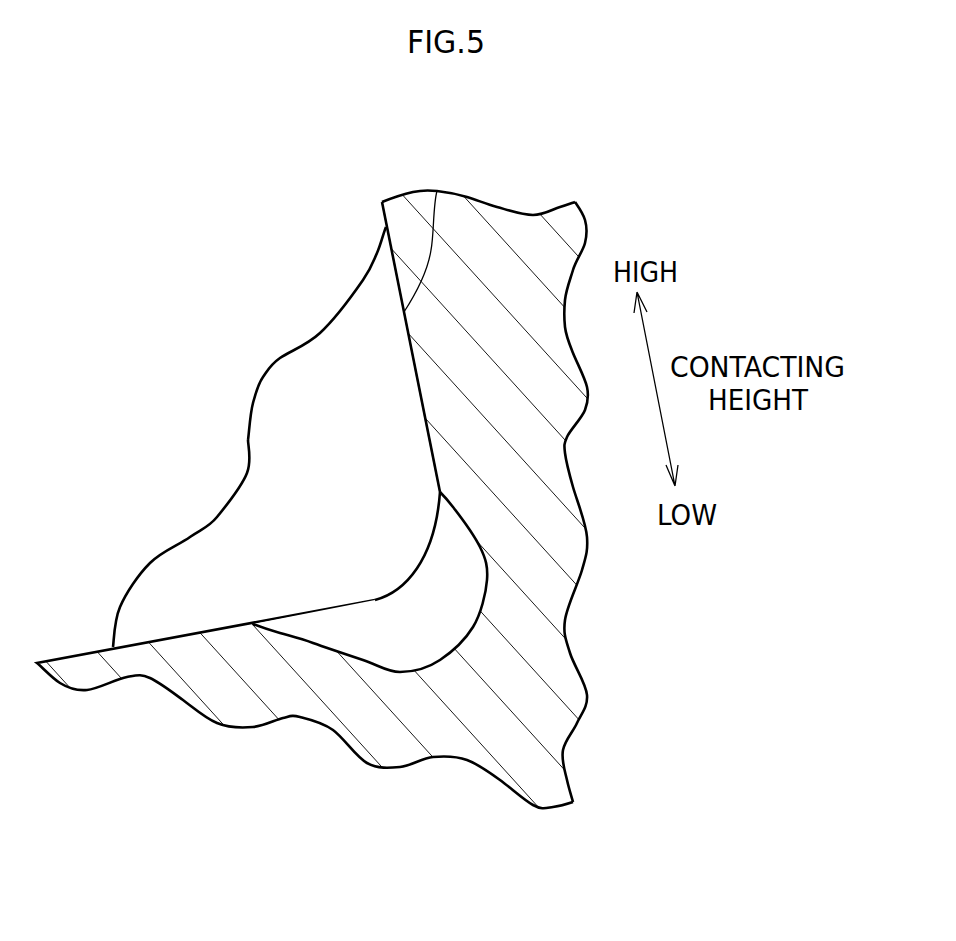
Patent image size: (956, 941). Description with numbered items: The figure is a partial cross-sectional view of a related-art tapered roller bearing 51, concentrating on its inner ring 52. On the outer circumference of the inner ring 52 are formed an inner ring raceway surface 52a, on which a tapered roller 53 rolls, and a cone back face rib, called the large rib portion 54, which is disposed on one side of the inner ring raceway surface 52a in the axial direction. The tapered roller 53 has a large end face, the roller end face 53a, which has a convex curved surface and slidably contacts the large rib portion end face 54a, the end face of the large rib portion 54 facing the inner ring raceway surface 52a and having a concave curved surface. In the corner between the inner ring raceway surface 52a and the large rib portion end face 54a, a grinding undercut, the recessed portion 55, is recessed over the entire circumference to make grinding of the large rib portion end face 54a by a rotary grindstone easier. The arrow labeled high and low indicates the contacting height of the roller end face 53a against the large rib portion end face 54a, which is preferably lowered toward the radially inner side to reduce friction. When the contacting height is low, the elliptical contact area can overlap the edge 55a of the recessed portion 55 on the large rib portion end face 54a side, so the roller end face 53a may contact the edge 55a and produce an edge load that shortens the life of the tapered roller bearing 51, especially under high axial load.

The tapered roller bearing 51 is at (478, 480).
The inner ring 52 is at (221, 729).
The inner ring raceway surface 52a is at (218, 630).
The tapered roller 53 is at (279, 357).
The roller end face 53a is at (437, 191).
The large rib portion 54 is at (567, 245).
The large rib portion end face 54a is at (428, 425).
The recessed portion 55 is at (447, 658).
The edge 55a is at (440, 492).